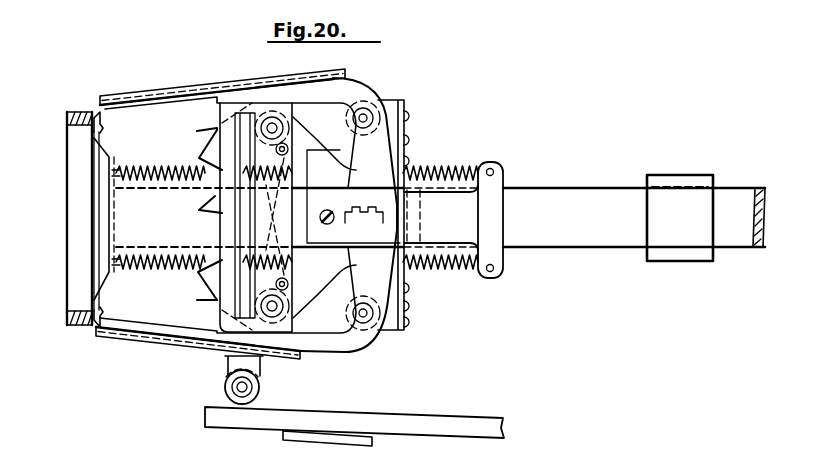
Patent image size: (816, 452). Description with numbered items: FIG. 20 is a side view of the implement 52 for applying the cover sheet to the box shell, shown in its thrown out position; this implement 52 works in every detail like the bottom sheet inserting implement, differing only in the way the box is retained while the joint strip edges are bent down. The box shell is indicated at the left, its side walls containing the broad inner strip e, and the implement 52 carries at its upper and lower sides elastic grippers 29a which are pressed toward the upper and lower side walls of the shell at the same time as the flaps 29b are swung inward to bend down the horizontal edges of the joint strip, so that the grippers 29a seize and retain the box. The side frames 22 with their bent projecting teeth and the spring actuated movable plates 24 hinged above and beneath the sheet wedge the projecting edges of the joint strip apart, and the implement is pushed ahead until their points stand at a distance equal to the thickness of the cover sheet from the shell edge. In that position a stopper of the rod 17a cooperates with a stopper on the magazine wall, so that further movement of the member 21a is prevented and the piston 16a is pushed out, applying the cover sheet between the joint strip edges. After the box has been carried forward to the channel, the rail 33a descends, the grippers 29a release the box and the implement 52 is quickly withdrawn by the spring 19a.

The strip e is at (82, 243).
The piston 16a is at (101, 277).
The elastic grippers 29a is at (98, 114).
The flaps 29b is at (258, 68).
The implement 52 is at (177, 303).
The spring 19a is at (440, 171).
The member 21a is at (418, 270).
The rod 17a is at (605, 250).
The side frames 22 is at (222, 212).
The movable plates 24 is at (213, 303).
The rail 33a is at (432, 425).